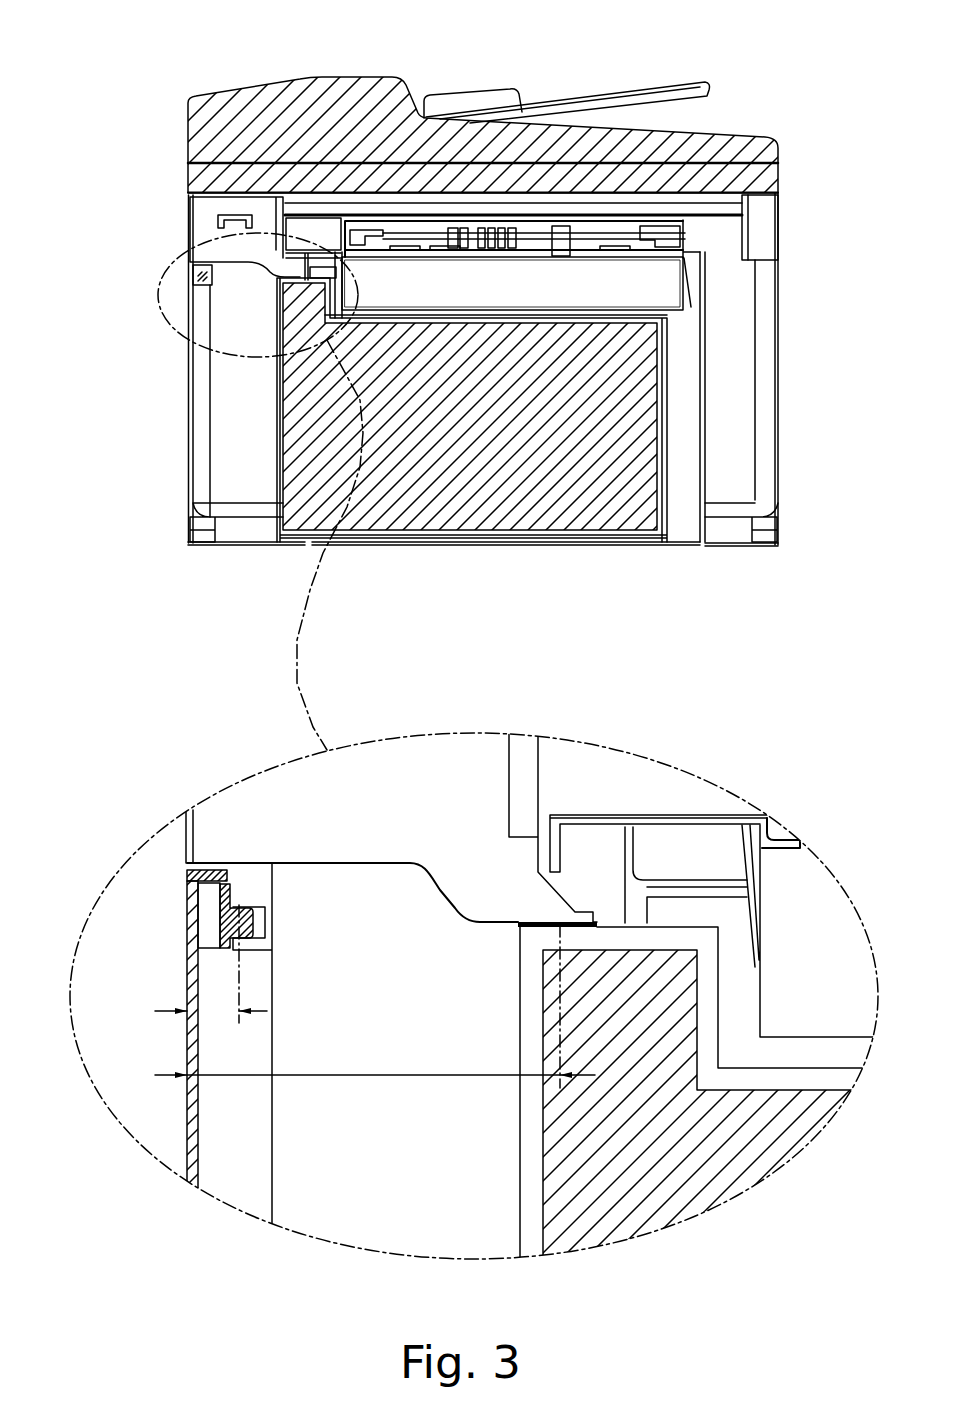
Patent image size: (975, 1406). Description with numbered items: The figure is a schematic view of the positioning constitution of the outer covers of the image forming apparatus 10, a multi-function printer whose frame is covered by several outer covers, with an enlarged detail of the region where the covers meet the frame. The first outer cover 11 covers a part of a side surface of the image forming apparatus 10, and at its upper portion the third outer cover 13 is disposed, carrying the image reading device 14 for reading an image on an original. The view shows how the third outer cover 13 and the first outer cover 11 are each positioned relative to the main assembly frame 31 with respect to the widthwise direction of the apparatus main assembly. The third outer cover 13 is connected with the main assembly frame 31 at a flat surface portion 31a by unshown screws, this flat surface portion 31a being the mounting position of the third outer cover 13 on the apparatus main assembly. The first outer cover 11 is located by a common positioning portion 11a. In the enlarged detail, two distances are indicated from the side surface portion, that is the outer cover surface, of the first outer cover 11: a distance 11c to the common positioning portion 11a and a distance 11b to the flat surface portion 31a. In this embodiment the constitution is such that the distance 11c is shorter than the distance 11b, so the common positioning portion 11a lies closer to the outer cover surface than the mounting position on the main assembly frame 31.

The image forming apparatus 10 is at (745, 58).
The first outer cover 11 is at (190, 393).
The common positioning portion 11a is at (243, 908).
The distance 11b is at (366, 1077).
The distance 11c is at (213, 1012).
The third outer cover 13 is at (200, 220).
The image reading device 14 is at (308, 80).
The main assembly frame 31 is at (280, 313).
The flat surface portion 31a is at (540, 930).